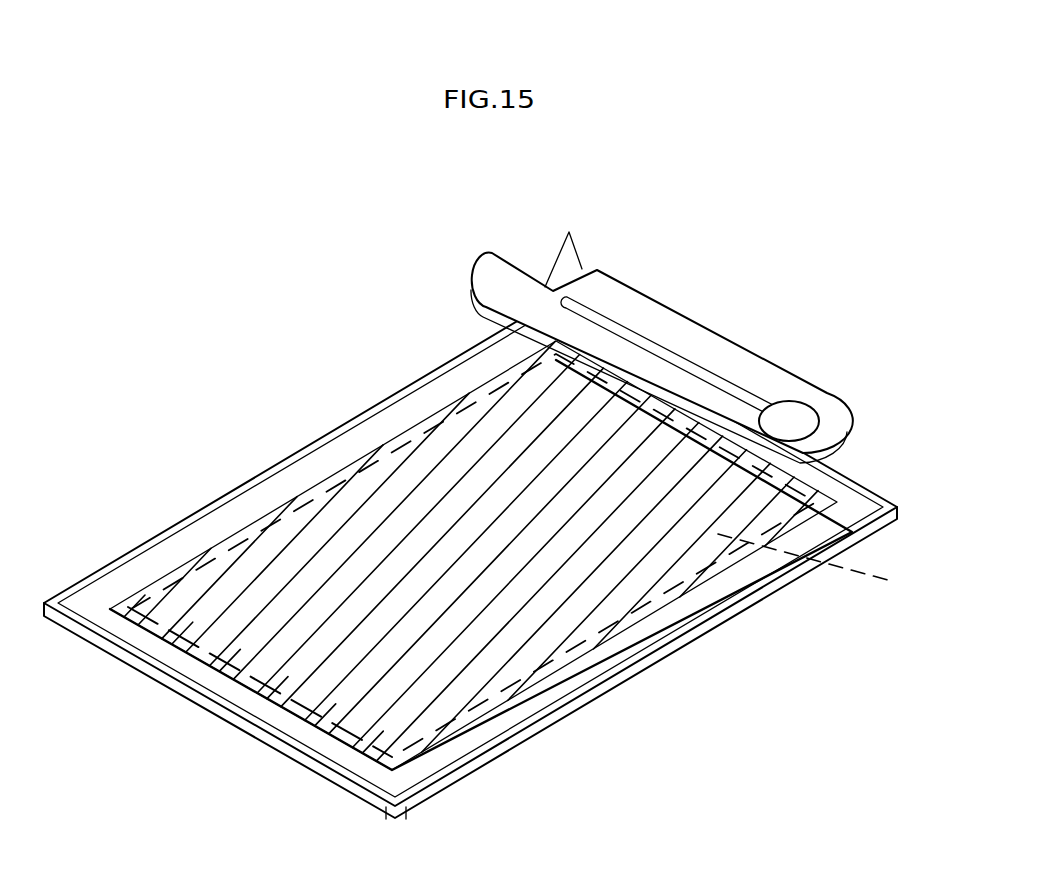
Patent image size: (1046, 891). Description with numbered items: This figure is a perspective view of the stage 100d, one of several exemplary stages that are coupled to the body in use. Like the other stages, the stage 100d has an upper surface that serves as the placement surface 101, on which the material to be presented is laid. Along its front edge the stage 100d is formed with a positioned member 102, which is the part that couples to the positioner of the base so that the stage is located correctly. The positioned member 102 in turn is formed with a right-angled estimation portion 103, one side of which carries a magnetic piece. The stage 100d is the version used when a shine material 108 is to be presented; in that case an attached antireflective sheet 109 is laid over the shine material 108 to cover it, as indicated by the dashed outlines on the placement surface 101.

The stage 100d is at (856, 488).
The placement surface 101 is at (680, 612).
The positioned member 102 is at (704, 344).
The right-angled estimation portion 103 is at (569, 232).
The shine material 108 is at (829, 566).
The antireflective sheet 109 is at (308, 488).